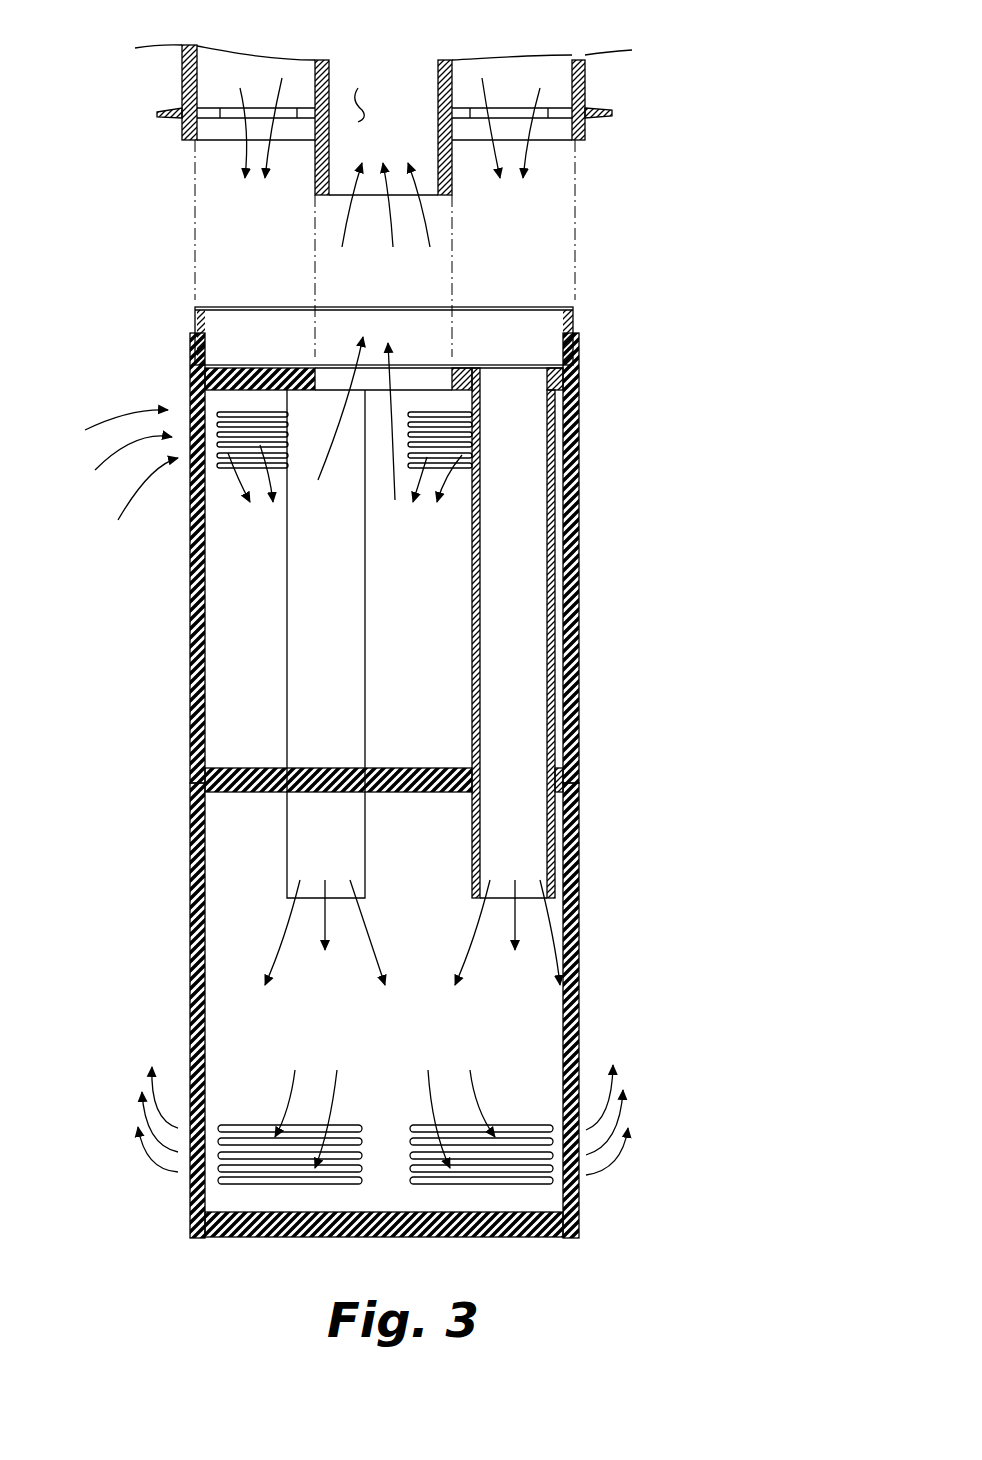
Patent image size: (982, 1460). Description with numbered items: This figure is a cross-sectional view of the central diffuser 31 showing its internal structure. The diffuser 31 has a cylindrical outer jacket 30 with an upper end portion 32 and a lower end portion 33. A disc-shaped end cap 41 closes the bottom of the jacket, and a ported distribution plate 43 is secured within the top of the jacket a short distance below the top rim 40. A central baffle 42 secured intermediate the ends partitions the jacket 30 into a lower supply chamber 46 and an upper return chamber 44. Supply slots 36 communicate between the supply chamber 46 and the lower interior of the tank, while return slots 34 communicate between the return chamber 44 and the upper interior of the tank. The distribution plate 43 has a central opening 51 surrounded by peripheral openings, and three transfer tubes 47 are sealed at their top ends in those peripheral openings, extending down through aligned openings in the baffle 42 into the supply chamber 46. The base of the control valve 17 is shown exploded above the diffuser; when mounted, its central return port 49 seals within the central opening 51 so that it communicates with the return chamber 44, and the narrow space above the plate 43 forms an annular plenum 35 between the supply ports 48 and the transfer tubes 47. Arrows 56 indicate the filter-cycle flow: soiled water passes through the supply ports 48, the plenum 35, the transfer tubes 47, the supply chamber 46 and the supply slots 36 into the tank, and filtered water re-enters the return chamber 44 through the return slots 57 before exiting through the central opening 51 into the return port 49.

The control valve 17 is at (428, 101).
The cylindrical outer jacket 30 is at (397, 821).
The central diffuser 31 is at (404, 658).
The upper end portion 32 is at (578, 412).
The lower end portion 33 is at (578, 1195).
The return slots 34 is at (235, 440).
The annular plenum 35 is at (545, 340).
The supply slots 36 is at (425, 1185).
The top rim 40 is at (427, 300).
The disc-shaped end cap 41 is at (497, 1238).
The central baffle 42 is at (232, 765).
The ported distribution plate 43 is at (233, 368).
The upper return chamber 44 is at (222, 598).
The lower supply chamber 46 is at (222, 890).
The transfer tubes 47 is at (352, 668).
The supply ports 48 is at (512, 110).
The central return port 49 is at (360, 97).
The central opening 51 is at (425, 378).
The arrows 56 is at (285, 80).
The return slots 57 is at (388, 222).